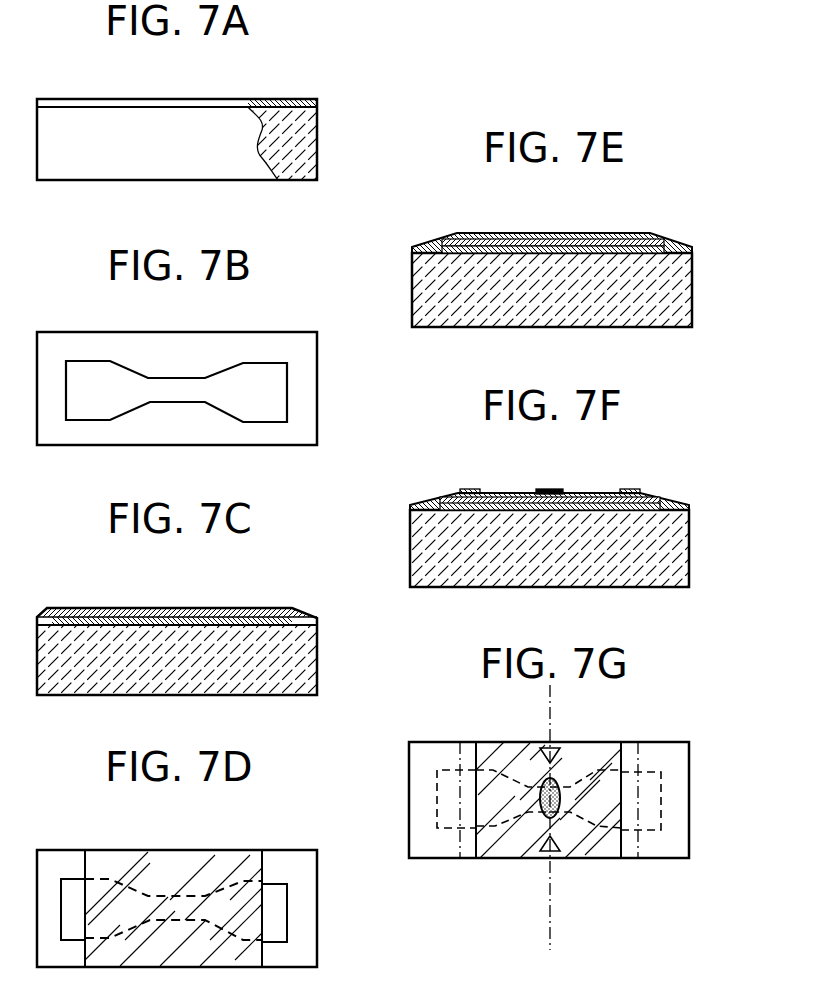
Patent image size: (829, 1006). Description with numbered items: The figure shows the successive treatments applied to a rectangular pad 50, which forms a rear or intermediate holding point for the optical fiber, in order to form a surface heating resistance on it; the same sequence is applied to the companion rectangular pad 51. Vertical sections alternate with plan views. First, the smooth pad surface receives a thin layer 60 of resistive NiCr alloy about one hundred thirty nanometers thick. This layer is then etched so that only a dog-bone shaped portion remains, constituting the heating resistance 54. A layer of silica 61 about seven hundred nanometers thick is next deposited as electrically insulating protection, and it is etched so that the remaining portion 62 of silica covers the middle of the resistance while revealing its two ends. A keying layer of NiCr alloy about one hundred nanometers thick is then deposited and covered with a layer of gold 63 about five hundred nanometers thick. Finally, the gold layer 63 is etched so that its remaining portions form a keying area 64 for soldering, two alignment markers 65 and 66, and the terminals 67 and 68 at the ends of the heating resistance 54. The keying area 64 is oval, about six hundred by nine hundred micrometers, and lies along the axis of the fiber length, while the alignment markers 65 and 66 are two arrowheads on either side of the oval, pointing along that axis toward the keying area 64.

In FIG. 7A, the rectangular pad 50 is at (322, 131).
In FIG. 7B, the rectangular pad 50 is at (324, 397).
In FIG. 7C, the rectangular pad 50 is at (324, 662).
In FIG. 7D, the rectangular pad 50 is at (324, 911).
In FIG. 7E, the rectangular pad 50 is at (404, 290).
In FIG. 7F, the rectangular pad 50 is at (402, 553).
In FIG. 7G, the rectangular pad 50 is at (401, 791).
In FIG. 7C, the rectangular pad 51 is at (229, 608).
In FIG. 7B, the heating resistance 54 is at (184, 378).
In FIG. 7D, the heating resistance 54 is at (170, 896).
In FIG. 7E, the heating resistance 54 is at (588, 239).
In FIG. 7F, the heating resistance 54 is at (609, 493).
In FIG. 7G, the heating resistance 54 is at (595, 820).
In FIG. 7A, the thin layer of resistive metal material 60 is at (293, 100).
In FIG. 7C, the layer of silica 61 is at (281, 608).
In FIG. 7D, the remaining portion of silica layer 62 is at (220, 868).
In FIG. 7E, the remaining portion of silica layer 62 is at (526, 239).
In FIG. 7F, the remaining portion of silica layer 62 is at (512, 493).
In FIG. 7G, the remaining portion of silica layer 62 is at (494, 755).
In FIG. 7E, the layer of gold 63 is at (456, 233).
In FIG. 7F, the keying area 64 is at (556, 489).
In FIG. 7G, the keying area 64 is at (553, 788).
In FIG. 7G, the alignment marker 65 is at (546, 748).
In FIG. 7G, the alignment marker 66 is at (546, 853).
In FIG. 7F, the terminal of the heating resistance 67 is at (445, 492).
In FIG. 7G, the terminal of the heating resistance 67 is at (438, 755).
In FIG. 7F, the terminal of the heating resistance 68 is at (655, 492).
In FIG. 7G, the terminal of the heating resistance 68 is at (655, 757).